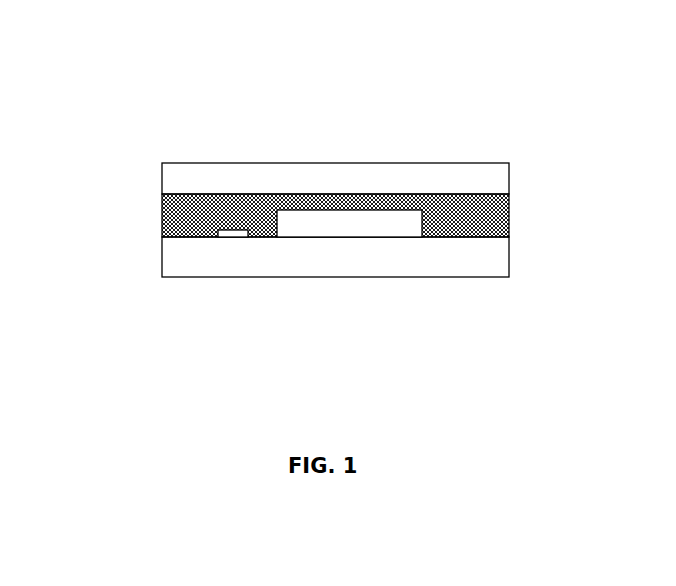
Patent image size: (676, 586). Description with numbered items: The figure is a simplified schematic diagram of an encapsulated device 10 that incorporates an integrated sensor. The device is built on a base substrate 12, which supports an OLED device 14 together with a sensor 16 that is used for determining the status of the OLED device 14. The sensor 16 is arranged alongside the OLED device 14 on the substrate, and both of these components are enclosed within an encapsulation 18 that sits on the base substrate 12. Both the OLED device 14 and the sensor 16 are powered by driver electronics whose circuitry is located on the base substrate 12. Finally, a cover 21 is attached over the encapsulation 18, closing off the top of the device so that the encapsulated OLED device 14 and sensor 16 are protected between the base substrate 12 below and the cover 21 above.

The encapsulated device 10 is at (160, 98).
The base substrate 12 is at (509, 265).
The OLED device 14 is at (365, 222).
The sensor 16 is at (235, 237).
The encapsulation 18 is at (162, 218).
The cover 21 is at (509, 173).